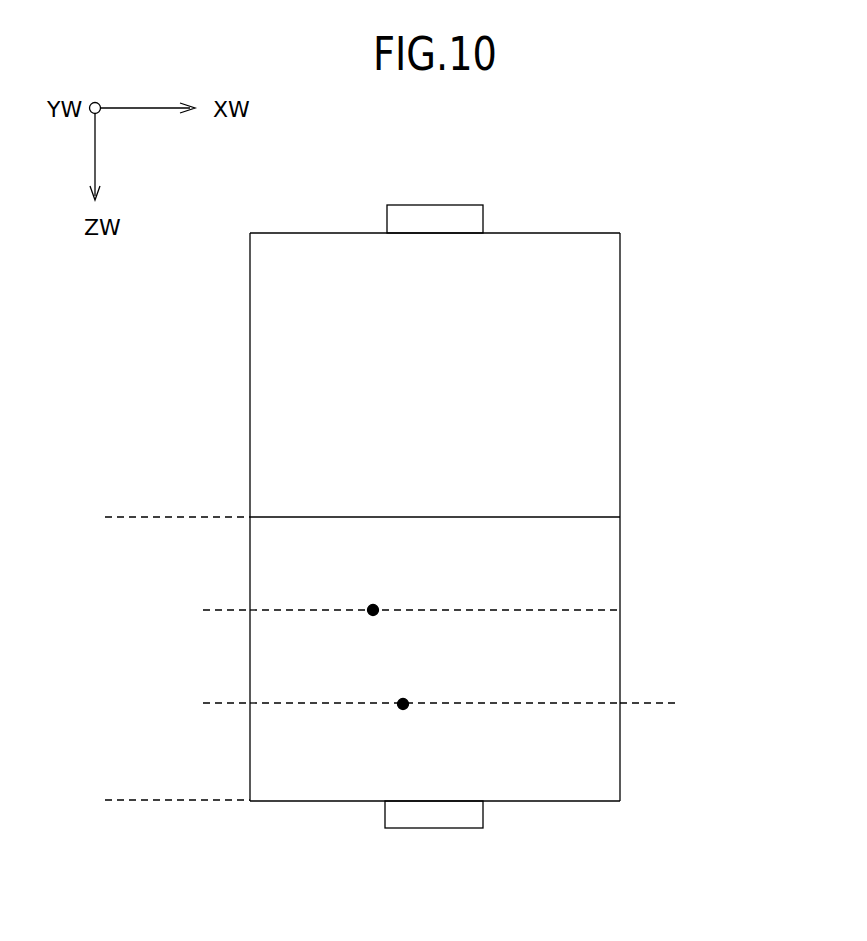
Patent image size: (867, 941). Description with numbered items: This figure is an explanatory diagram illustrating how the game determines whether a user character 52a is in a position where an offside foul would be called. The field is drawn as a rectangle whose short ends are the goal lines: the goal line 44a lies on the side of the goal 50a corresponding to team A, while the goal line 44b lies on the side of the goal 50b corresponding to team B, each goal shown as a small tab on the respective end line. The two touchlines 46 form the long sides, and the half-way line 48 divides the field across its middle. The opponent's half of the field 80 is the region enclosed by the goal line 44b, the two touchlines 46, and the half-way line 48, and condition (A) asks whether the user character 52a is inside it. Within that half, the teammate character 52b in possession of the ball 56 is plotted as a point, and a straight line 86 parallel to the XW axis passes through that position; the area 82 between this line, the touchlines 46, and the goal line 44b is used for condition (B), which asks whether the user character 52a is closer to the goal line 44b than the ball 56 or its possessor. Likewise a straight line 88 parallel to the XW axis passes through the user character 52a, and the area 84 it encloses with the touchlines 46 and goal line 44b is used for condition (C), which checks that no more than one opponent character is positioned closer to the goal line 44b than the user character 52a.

The goal line 44a is at (553, 232).
The goal line 44b is at (547, 802).
The touchlines 46 is at (250, 290).
The half-way line 48 is at (538, 517).
The goal 50a is at (435, 204).
The goal 50b is at (433, 830).
The user character 52a is at (406, 698).
The teammate character 52b is at (377, 604).
The ball 56 is at (416, 579).
The opponent's half of field 80 is at (104, 517).
The area 82 is at (184, 610).
The area 84 is at (697, 702).
The straight line 86 is at (298, 609).
The straight line 88 is at (305, 702).